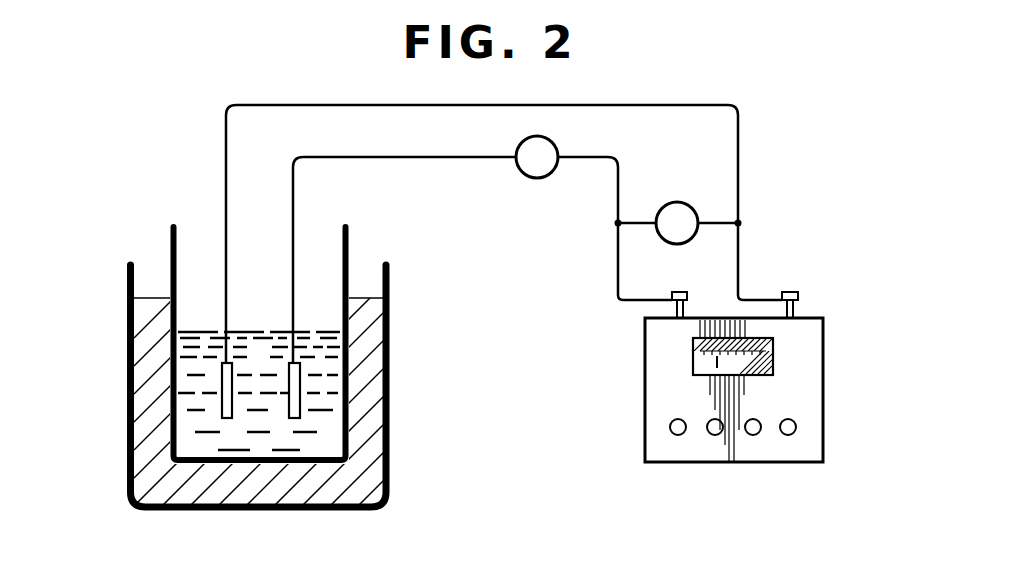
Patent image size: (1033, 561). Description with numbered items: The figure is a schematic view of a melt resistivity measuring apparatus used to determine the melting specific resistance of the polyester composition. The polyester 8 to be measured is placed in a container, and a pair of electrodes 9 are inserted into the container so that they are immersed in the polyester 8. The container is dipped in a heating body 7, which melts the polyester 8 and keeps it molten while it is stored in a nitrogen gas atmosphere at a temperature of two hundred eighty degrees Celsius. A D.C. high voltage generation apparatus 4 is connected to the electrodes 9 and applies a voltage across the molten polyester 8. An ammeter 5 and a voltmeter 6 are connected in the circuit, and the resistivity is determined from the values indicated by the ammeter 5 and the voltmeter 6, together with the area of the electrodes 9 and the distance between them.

The D.C. high voltage generation apparatus 4 is at (823, 403).
The ammeter 5 is at (537, 179).
The voltmeter 6 is at (676, 200).
The heating body 7 is at (372, 362).
The polyester 8 is at (323, 422).
The electrodes 9 is at (291, 383).